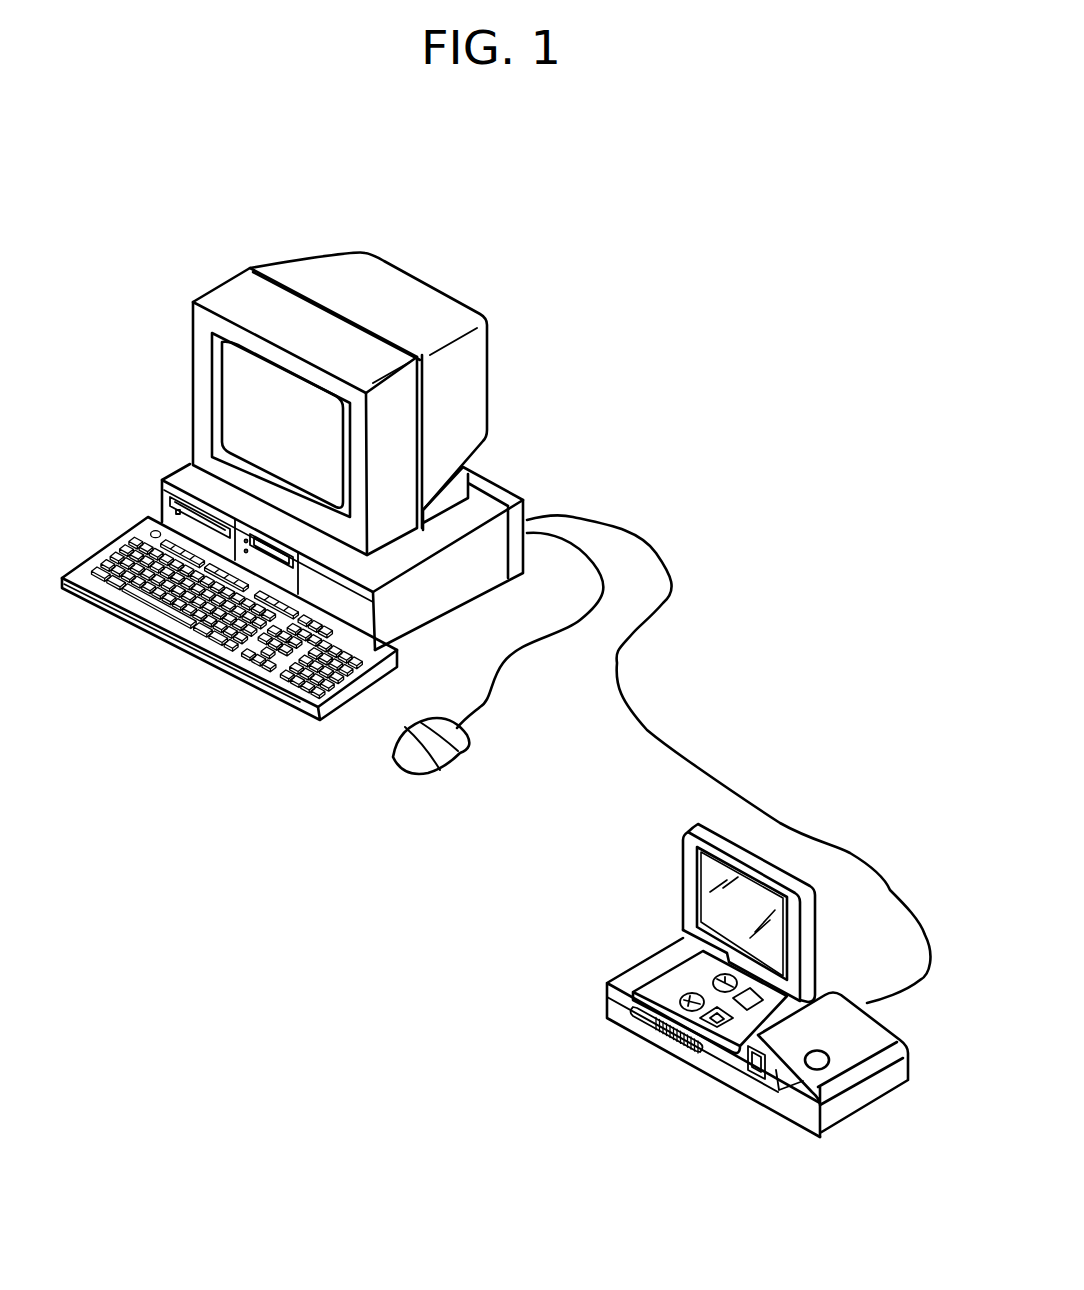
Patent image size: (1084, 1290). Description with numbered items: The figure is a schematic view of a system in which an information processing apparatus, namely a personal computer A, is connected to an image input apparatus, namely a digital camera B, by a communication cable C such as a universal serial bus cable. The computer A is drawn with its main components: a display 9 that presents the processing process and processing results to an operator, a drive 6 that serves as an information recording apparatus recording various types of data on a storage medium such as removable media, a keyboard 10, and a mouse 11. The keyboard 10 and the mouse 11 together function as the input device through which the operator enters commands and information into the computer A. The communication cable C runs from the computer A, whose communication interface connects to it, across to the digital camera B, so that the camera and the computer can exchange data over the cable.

The drive 6 is at (170, 490).
The display 9 is at (230, 402).
The keyboard 10 is at (183, 623).
The mouse 11 is at (445, 758).
The personal computer A is at (470, 252).
The digital camera B is at (873, 1133).
The communication cable C is at (710, 773).